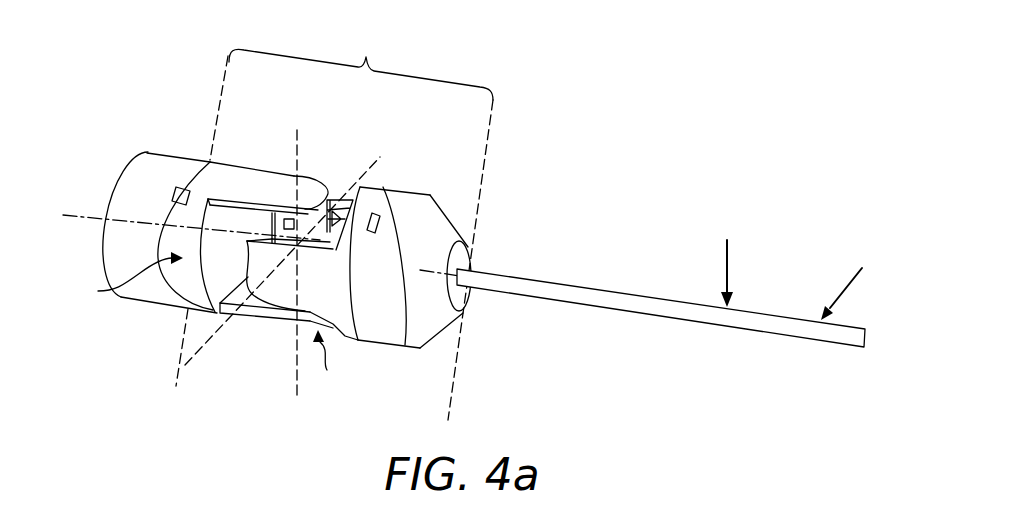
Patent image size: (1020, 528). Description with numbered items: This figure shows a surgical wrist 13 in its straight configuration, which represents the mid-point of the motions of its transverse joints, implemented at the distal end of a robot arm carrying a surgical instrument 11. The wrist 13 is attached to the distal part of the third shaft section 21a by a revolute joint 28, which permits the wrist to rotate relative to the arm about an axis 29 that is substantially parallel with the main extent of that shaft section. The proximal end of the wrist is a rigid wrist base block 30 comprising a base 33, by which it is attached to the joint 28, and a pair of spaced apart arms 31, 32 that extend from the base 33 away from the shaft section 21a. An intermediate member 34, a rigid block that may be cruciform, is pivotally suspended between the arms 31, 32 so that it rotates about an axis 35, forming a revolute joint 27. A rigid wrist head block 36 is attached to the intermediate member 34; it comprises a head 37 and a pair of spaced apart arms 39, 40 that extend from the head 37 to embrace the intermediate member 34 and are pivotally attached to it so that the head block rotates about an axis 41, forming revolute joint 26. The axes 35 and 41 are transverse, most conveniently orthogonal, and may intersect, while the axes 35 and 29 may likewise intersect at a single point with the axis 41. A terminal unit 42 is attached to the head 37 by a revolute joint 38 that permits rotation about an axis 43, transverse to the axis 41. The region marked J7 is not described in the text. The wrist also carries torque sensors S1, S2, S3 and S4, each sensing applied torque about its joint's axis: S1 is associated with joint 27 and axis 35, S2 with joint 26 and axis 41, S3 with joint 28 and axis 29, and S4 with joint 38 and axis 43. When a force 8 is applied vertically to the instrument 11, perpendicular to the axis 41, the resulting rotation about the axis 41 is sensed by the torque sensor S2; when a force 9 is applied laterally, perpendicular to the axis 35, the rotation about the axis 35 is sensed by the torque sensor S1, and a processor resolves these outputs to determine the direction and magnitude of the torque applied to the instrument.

The force 8 is at (727, 249).
The force 9 is at (844, 279).
The surgical instrument 11 is at (773, 318).
The wrist portion 13 is at (334, 226).
The distal part of the third shaft section 21a is at (148, 158).
The joint 26 is at (250, 271).
The joint 27 is at (310, 176).
The joint 28 is at (185, 160).
The axis 29 is at (77, 215).
The wrist base block 30 is at (126, 277).
The arm 31 is at (240, 318).
The arm 32 is at (253, 170).
The base 33 is at (180, 290).
The intermediate member 34 is at (310, 226).
The axis 35 is at (297, 386).
The wrist head block 36 is at (322, 359).
The head 37 is at (352, 336).
The joint 38 is at (357, 280).
The arm 39 is at (303, 312).
The arm 40 is at (336, 208).
The axis 41 is at (188, 356).
The terminal unit 42 is at (462, 228).
The axis 43 is at (606, 300).
The joint J7 is at (637, 307).
The torque sensor S1 is at (284, 225).
The torque sensor S2 is at (335, 215).
The torque sensor S3 is at (174, 196).
The torque sensor S4 is at (378, 212).